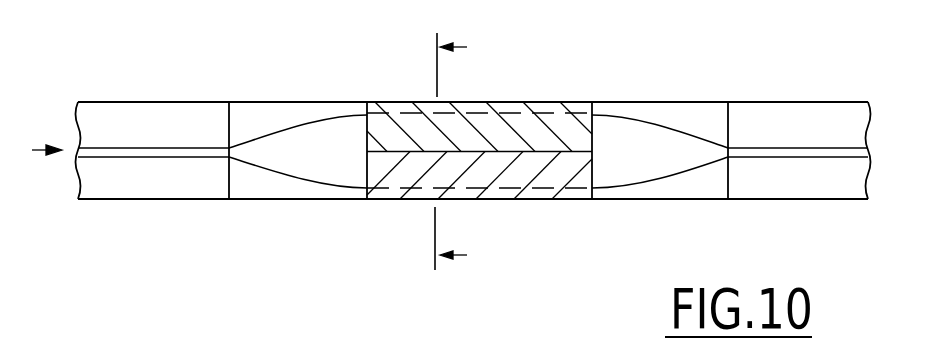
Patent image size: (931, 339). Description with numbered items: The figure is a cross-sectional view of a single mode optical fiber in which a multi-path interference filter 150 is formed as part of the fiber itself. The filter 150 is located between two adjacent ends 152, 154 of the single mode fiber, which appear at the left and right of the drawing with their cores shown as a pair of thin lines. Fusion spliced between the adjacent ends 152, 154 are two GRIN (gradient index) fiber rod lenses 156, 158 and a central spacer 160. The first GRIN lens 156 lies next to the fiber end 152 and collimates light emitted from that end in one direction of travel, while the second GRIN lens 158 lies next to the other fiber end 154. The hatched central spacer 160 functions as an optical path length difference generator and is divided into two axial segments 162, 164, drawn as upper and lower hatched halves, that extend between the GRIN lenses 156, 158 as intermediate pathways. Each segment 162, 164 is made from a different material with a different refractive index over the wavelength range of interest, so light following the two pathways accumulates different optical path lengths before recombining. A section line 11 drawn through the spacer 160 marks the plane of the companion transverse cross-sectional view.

The section line 11- 11 is at (433, 152).
The multi-path interference filter 150 is at (363, 52).
The fiber end 152 is at (193, 113).
The fiber end 154 is at (803, 104).
The GRIN fiber rod lens 156 is at (292, 188).
The GRIN fiber rod lens 158 is at (695, 187).
The central spacer 160 is at (486, 112).
The axial segment 162 is at (560, 122).
The axial segment 164 is at (571, 177).